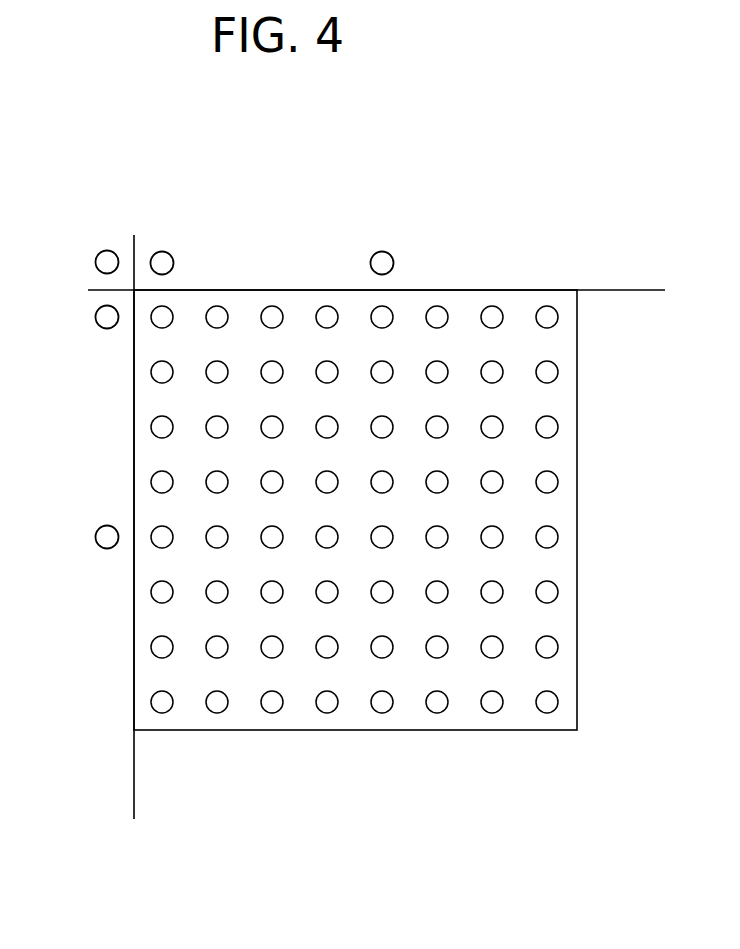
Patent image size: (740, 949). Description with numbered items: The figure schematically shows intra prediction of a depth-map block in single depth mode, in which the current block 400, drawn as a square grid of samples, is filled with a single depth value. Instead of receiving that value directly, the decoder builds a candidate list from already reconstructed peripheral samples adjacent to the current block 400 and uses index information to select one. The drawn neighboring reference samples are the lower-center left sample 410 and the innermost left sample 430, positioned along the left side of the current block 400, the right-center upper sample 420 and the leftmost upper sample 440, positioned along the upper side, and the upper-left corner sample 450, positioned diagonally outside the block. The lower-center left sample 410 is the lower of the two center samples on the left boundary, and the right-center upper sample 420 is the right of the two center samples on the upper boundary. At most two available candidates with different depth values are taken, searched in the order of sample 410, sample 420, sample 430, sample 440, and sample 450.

The current block 400 is at (577, 348).
The neighboring reference sample A_n/2 410 is at (107, 548).
The neighboring reference sample B_n/2 420 is at (393, 263).
The neighboring reference sample A_0 430 is at (107, 328).
The neighboring reference sample B_0 440 is at (173, 263).
The neighboring reference sample B_-1 450 is at (95, 259).